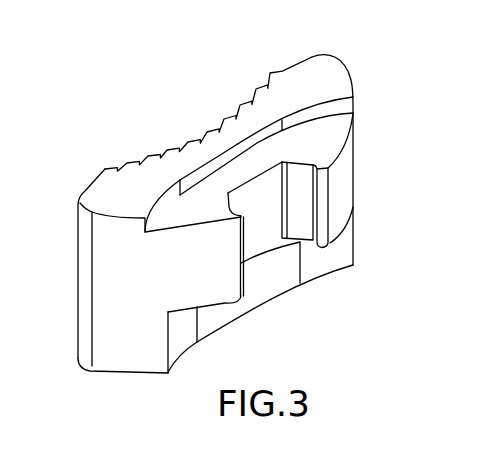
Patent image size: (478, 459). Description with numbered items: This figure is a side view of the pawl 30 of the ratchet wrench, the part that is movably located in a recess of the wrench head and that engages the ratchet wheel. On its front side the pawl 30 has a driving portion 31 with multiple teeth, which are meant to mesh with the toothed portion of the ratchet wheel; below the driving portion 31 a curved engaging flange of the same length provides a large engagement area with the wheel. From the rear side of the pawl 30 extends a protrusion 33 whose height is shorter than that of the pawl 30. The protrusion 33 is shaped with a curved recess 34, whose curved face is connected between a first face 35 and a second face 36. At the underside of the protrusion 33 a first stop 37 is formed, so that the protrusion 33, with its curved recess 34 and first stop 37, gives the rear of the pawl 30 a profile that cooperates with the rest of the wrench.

The pawl 30 is at (323, 77).
The driving portion 31 is at (207, 132).
The protrusion 33 is at (323, 140).
The curved recess 34 is at (262, 230).
The first face 35 is at (302, 198).
The second face 36 is at (227, 205).
The first stop 37 is at (215, 303).